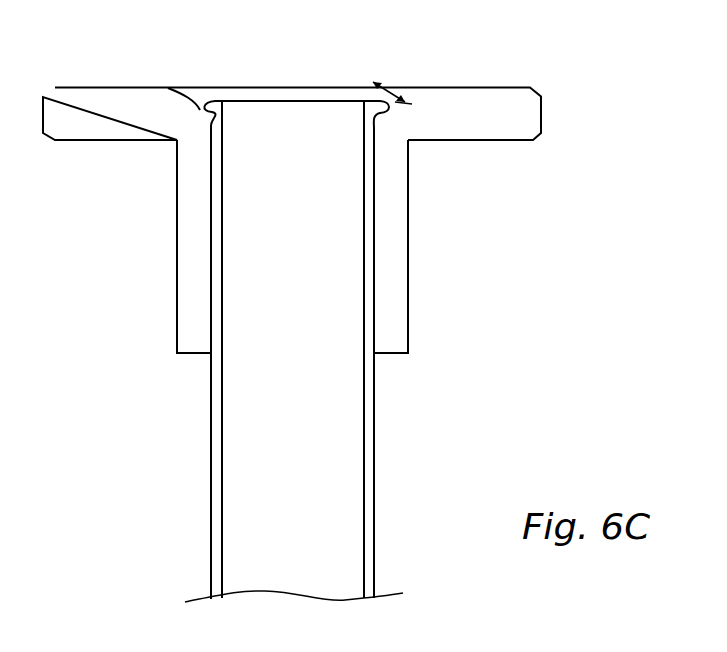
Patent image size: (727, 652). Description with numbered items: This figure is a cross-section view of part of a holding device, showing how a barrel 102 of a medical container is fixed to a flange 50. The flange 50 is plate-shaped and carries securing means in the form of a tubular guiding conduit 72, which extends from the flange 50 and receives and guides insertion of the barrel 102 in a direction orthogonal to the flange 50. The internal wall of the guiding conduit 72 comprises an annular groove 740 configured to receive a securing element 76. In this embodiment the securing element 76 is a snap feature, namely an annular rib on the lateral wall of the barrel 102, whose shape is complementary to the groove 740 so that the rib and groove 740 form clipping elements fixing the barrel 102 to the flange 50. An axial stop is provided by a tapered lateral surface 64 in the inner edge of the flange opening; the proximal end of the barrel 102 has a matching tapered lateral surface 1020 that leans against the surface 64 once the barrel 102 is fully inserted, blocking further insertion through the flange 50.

The flange 50 is at (510, 112).
The guiding conduit 72 is at (408, 273).
The barrel 102 is at (375, 477).
The securing element 76 is at (217, 101).
The annular groove 740 is at (193, 108).
The tapered lateral surface 64 is at (373, 82).
The tapered lateral surface of the barrel 1020 is at (410, 104).